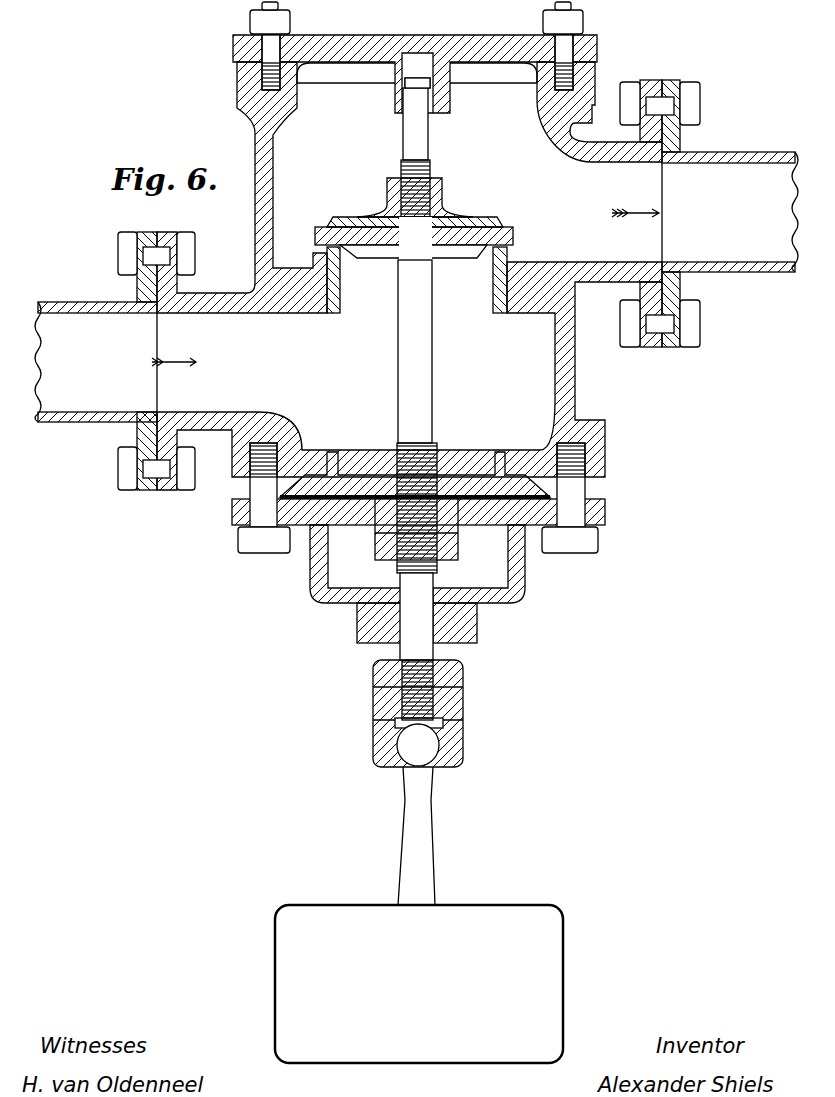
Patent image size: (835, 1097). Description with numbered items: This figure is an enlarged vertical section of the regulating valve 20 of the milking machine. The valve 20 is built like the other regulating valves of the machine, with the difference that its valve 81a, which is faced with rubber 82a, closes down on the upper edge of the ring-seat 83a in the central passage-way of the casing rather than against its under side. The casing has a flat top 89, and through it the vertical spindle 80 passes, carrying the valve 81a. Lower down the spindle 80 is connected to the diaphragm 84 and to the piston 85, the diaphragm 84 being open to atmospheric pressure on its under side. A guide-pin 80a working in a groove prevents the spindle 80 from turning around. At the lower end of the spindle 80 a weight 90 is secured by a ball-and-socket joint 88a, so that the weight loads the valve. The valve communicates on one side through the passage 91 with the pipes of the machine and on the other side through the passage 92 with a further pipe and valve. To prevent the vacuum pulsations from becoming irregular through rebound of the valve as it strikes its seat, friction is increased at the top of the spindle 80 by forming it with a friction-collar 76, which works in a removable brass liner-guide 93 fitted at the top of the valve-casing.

The valve 20 is at (409, 332).
The friction-collar 76 is at (405, 88).
The vertical spindle 80 is at (414, 138).
The guide-pin 80a is at (385, 618).
The valve 81a is at (483, 222).
The rubber face 82a is at (505, 237).
The ring-seat 83a is at (362, 305).
The diaphragm 84 is at (502, 503).
The piston 85 is at (463, 455).
The ball-and-socket joint 88a is at (436, 713).
The flat top 89 is at (310, 40).
The weight 90 is at (419, 984).
The passage 91 is at (705, 213).
The passage 92 is at (115, 361).
The brass liner-guide 93 is at (417, 57).